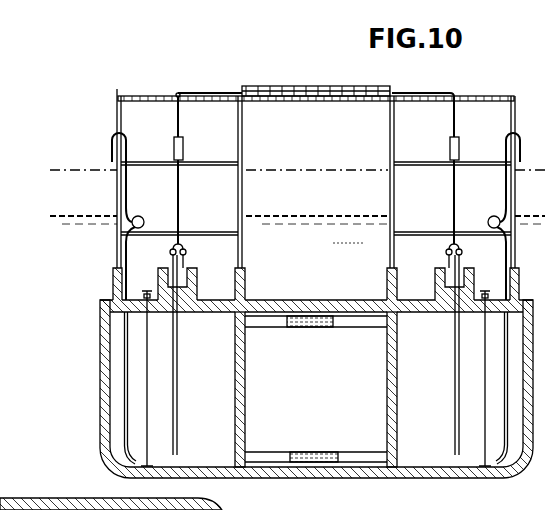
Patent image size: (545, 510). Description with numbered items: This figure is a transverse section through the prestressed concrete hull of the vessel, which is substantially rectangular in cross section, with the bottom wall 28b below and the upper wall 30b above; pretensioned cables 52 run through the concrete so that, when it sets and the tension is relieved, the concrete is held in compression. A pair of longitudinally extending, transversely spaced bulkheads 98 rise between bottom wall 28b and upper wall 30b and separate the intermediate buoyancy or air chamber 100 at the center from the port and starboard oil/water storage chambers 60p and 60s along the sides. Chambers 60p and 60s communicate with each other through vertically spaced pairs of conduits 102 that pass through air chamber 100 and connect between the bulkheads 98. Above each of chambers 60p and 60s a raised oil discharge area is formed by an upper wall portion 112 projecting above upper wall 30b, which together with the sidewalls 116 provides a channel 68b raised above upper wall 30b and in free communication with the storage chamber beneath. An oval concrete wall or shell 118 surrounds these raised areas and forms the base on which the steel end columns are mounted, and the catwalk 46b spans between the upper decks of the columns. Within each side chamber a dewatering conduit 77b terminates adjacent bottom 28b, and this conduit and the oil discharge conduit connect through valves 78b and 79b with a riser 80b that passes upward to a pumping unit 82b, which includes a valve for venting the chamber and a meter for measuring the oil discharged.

The bottom wall 28b is at (285, 478).
The upper wall 30b is at (321, 305).
The catwalk 46b is at (335, 102).
The pretensioned cable 52 is at (280, 305).
The port storage chamber 60p is at (208, 450).
The starboard storage chamber 60s is at (430, 450).
The channel 68b is at (181, 292).
The dewatering conduit 77b is at (178, 410).
The valve 78b is at (184, 248).
The valve 79b is at (172, 248).
The riser 80b is at (177, 185).
The pumping unit 82b is at (184, 145).
The bulkhead 98 is at (244, 368).
The intermediate buoyancy chamber 100 is at (323, 403).
The conduit 102 is at (292, 329).
The upper wall portion 112 is at (168, 262).
The sidewall 116 is at (165, 284).
The oval wall 118 is at (115, 285).